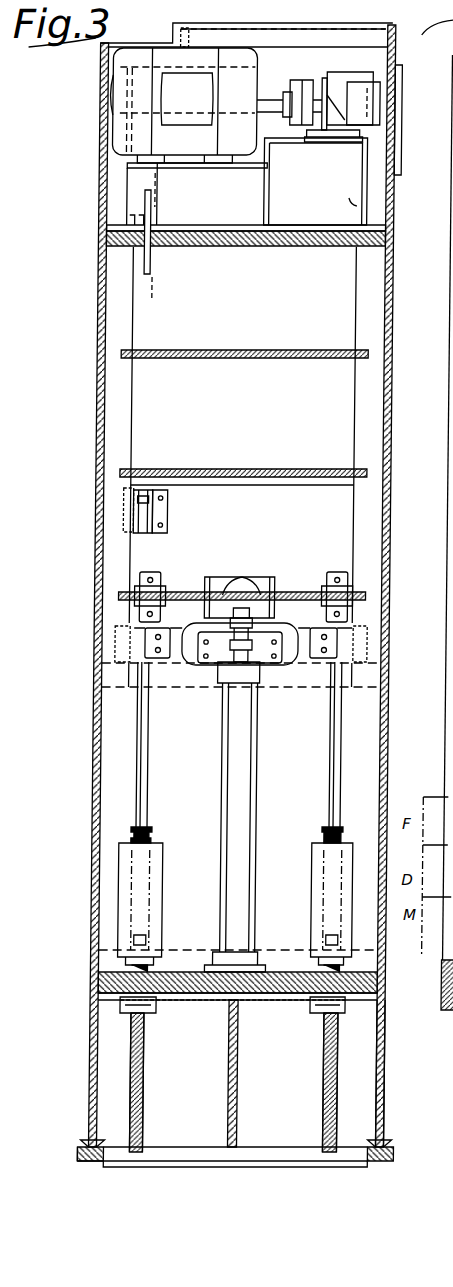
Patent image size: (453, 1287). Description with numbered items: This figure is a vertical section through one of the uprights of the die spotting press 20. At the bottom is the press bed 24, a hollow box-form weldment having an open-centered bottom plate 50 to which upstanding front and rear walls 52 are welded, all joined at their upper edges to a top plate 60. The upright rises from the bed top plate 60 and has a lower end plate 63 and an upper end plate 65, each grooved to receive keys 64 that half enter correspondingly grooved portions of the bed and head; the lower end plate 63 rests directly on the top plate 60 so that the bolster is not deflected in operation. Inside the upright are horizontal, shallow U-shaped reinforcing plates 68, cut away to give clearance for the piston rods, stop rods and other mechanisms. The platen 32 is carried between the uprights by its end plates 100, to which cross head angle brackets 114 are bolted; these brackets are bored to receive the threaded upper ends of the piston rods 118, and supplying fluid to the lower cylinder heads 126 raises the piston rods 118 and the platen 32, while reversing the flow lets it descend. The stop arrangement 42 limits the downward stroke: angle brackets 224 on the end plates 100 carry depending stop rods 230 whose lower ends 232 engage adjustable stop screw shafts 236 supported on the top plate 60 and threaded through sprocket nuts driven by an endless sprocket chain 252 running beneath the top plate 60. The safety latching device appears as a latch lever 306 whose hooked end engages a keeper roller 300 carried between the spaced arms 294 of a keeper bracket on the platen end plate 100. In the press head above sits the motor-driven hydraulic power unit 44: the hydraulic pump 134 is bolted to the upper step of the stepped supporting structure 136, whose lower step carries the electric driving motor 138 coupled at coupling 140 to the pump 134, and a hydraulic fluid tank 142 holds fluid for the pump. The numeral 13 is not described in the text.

The die spotting press 20 is at (232, 17).
The motor-driven hydraulic power unit 44 is at (273, 82).
The coupling 140 is at (303, 82).
The hydraulic pump 134 is at (356, 80).
The electric driving motor 138 is at (128, 52).
The stepped supporting structure 136 is at (248, 174).
The hydraulic fluid tank 142 is at (358, 206).
The section line 13 is at (156, 172).
The latch lever 306 is at (156, 263).
The upper end plate 65 is at (286, 240).
The platen 32 is at (205, 482).
The reinforcing plate 68 is at (266, 470).
The keeper roller 300 is at (135, 490).
The arms 294 is at (128, 510).
The platen end plate 100 is at (352, 520).
The angle bracket 224 is at (168, 628).
The piston rod 118 is at (240, 652).
The cross head angle bracket 114 is at (272, 660).
The stop arrangement 42 is at (140, 778).
The stop rod 230 is at (157, 732).
The lower end of stop rod 232 is at (166, 905).
The lower cylinder head 126 is at (213, 950).
The lower end plate 63 is at (285, 985).
The top plate 60 is at (104, 976).
The press bed 24 is at (98, 1040).
The stop screw shaft 236 is at (138, 1050).
The sprocket chain 252 is at (210, 1010).
The key 64 is at (258, 1000).
The front and rear walls 52 is at (396, 1082).
The bottom plate 50 is at (404, 1156).